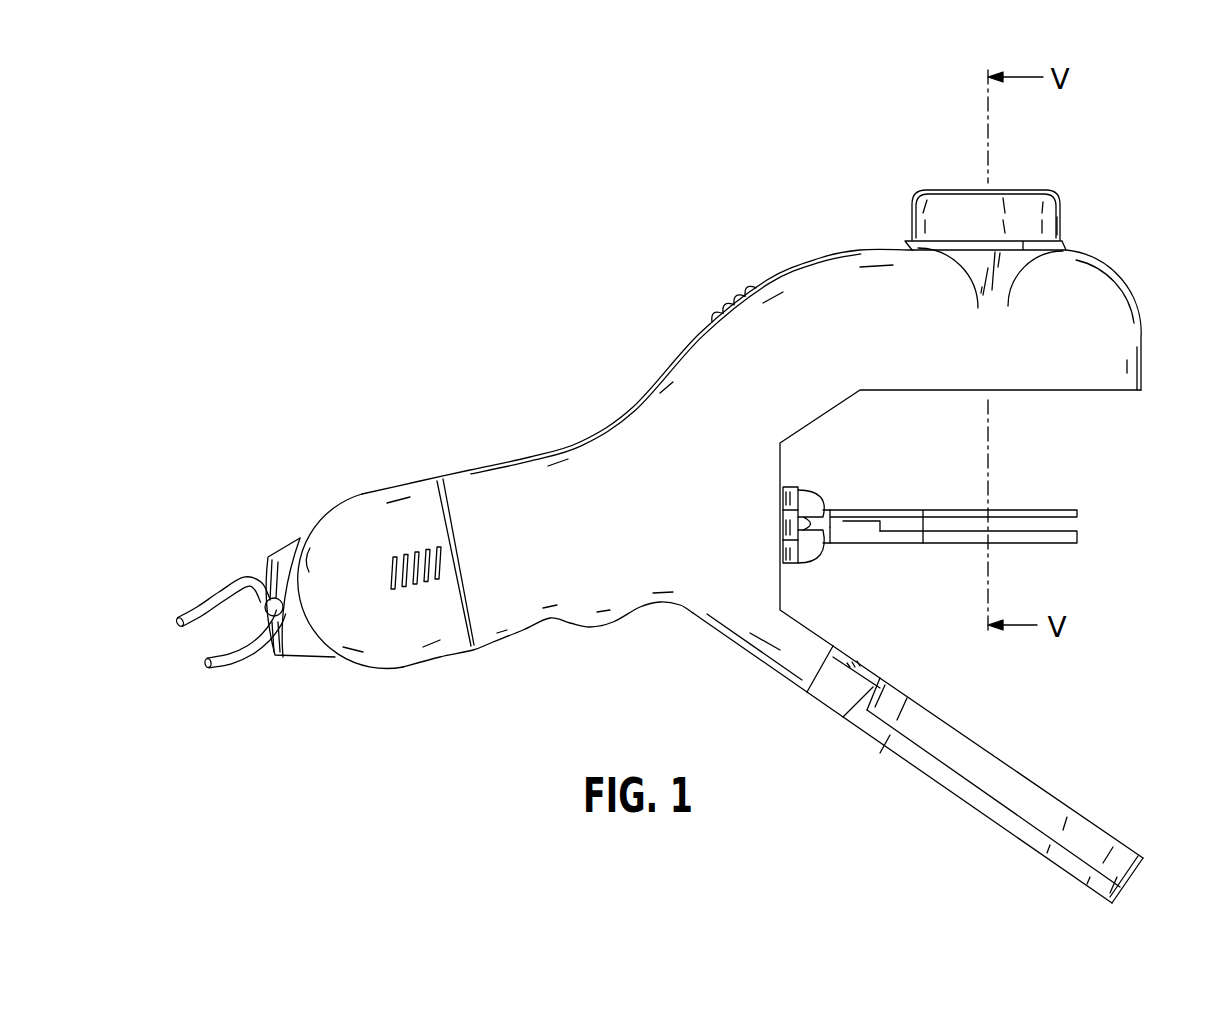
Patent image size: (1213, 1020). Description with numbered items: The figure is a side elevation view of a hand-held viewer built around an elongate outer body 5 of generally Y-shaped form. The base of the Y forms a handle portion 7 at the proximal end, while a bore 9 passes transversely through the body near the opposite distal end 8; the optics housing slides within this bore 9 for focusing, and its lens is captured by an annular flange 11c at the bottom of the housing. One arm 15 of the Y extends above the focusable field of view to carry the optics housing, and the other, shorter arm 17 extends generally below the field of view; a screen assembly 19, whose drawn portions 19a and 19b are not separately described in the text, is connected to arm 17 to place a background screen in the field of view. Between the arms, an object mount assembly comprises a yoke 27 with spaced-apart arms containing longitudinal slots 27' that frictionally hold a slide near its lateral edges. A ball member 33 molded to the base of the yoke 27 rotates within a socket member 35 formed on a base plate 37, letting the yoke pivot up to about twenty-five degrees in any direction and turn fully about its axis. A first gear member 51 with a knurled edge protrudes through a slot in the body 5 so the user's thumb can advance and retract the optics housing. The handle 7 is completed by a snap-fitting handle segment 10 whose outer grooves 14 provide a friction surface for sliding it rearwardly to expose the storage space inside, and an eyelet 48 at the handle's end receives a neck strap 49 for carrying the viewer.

The elongate outer body 5 is at (702, 333).
The handle portion 7 is at (522, 617).
The distal end 8 is at (1123, 313).
The bore 9 is at (1027, 403).
The handle segment 10 is at (393, 657).
The annular flange 11c is at (1027, 203).
The grooves 14 is at (437, 543).
The arm 15 is at (827, 267).
The arm 17 is at (797, 667).
The screen assembly 19 is at (1067, 777).
The handle lower wall 19a is at (960, 803).
The handle upper wall 19b is at (950, 720).
The yoke 27 is at (977, 494).
The slots 27' is at (996, 525).
The ball member 33 is at (812, 532).
The socket member 35 is at (822, 507).
The base plate 37 is at (790, 490).
The eyelet 48 is at (263, 572).
The neck strap 49 is at (243, 662).
The first gear member 51 is at (735, 288).